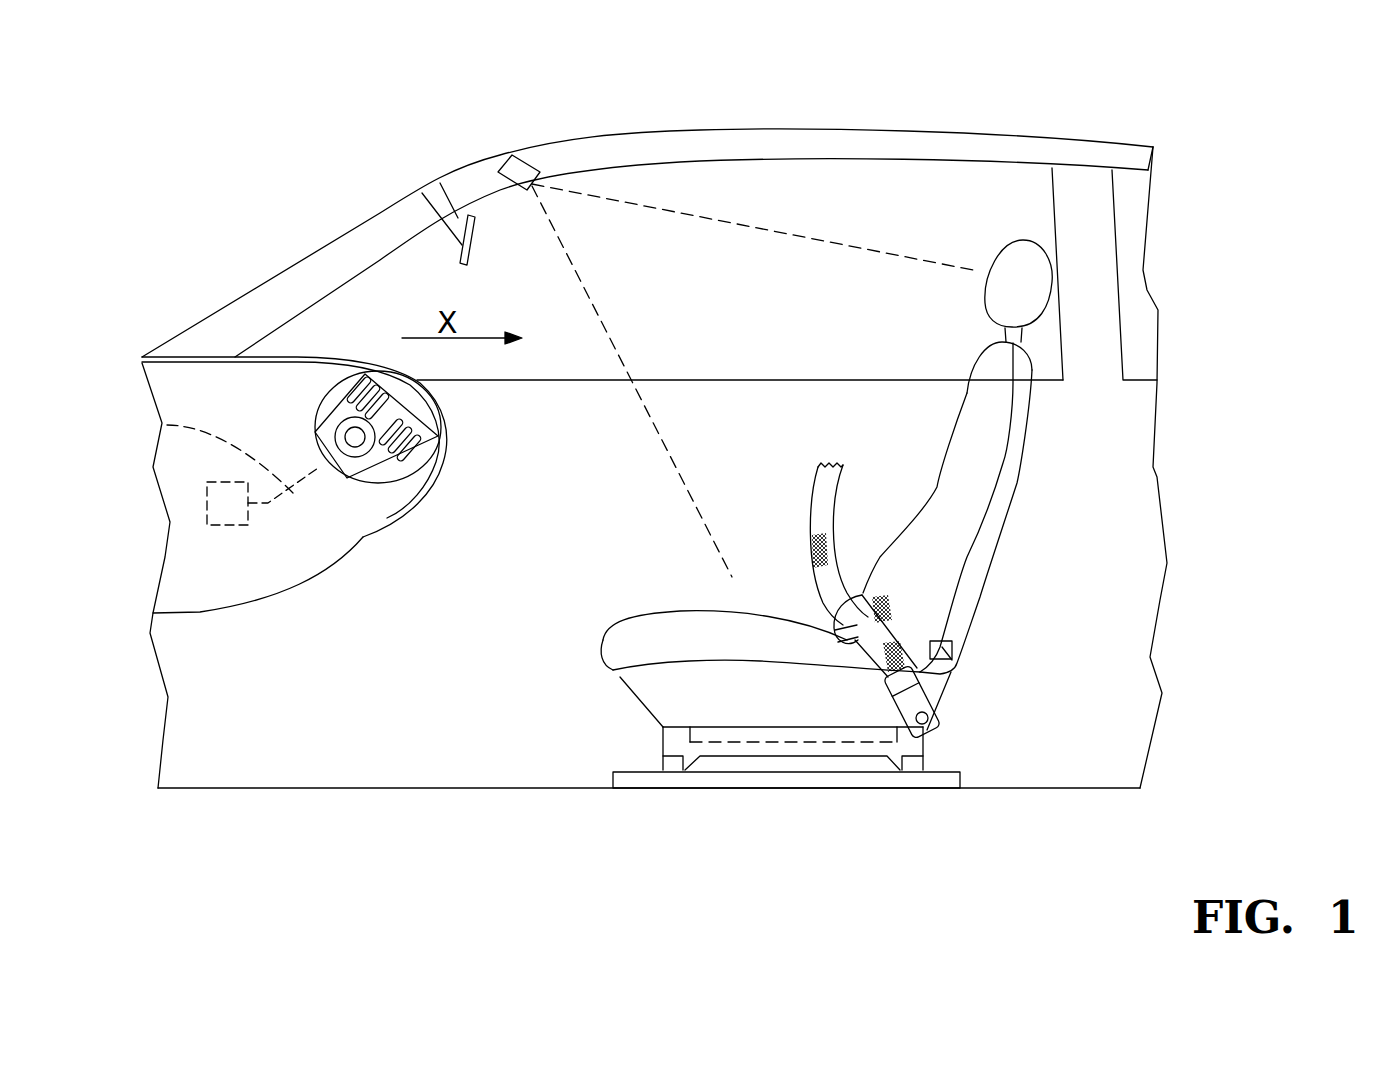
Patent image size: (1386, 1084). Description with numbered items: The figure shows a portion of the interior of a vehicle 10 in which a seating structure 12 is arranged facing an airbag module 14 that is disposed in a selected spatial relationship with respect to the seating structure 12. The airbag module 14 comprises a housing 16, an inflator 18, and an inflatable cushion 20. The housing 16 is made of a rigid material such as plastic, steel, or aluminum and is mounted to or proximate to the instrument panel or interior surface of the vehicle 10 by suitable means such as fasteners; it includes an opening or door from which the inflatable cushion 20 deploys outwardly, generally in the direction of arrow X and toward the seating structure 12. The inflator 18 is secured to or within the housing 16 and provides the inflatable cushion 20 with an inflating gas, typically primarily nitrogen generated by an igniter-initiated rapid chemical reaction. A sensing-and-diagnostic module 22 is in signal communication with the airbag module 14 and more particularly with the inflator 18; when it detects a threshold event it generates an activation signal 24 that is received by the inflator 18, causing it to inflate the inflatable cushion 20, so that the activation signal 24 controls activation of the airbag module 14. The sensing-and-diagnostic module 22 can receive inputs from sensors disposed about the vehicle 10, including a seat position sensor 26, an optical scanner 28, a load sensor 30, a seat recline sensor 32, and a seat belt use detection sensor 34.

The vehicle 10 is at (1222, 226).
The seating structure 12 is at (1005, 507).
The airbag module 14 is at (422, 462).
The housing 16 is at (313, 422).
The inflator 18 is at (358, 458).
The inflatable cushion 20 is at (404, 400).
The sensing-and-diagnostic module 22 is at (218, 525).
The activation signal 24 is at (167, 425).
The seat position sensor 26 is at (670, 763).
The optical scanner 28 is at (510, 155).
The load sensor 30 is at (917, 767).
The seat recline sensor 32 is at (953, 661).
The seat belt use detection sensor 34 is at (908, 703).